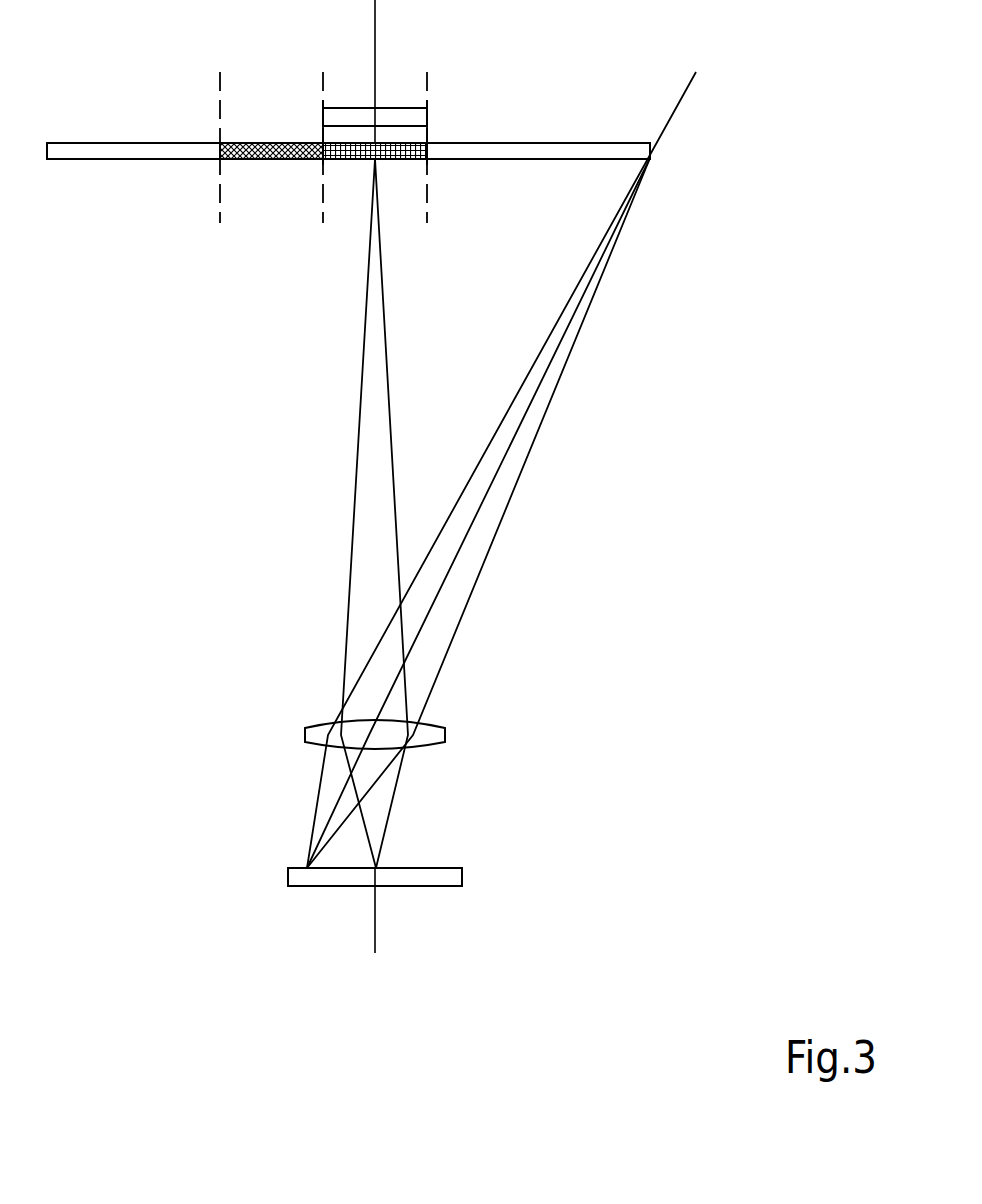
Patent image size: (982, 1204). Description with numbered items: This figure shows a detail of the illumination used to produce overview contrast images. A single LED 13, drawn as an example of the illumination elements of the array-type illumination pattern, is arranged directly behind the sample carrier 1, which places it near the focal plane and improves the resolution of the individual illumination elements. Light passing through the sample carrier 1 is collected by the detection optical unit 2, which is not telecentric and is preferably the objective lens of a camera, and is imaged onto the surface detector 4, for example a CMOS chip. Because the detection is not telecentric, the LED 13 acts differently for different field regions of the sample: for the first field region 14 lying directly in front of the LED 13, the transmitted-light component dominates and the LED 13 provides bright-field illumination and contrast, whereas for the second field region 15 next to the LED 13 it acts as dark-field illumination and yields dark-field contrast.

The sample carrier 1 is at (98, 141).
The detection optical unit 2 is at (445, 733).
The surface detector 4 is at (460, 873).
The LED 13 is at (408, 108).
The first field region 14 is at (400, 162).
The second field region 15 is at (272, 162).